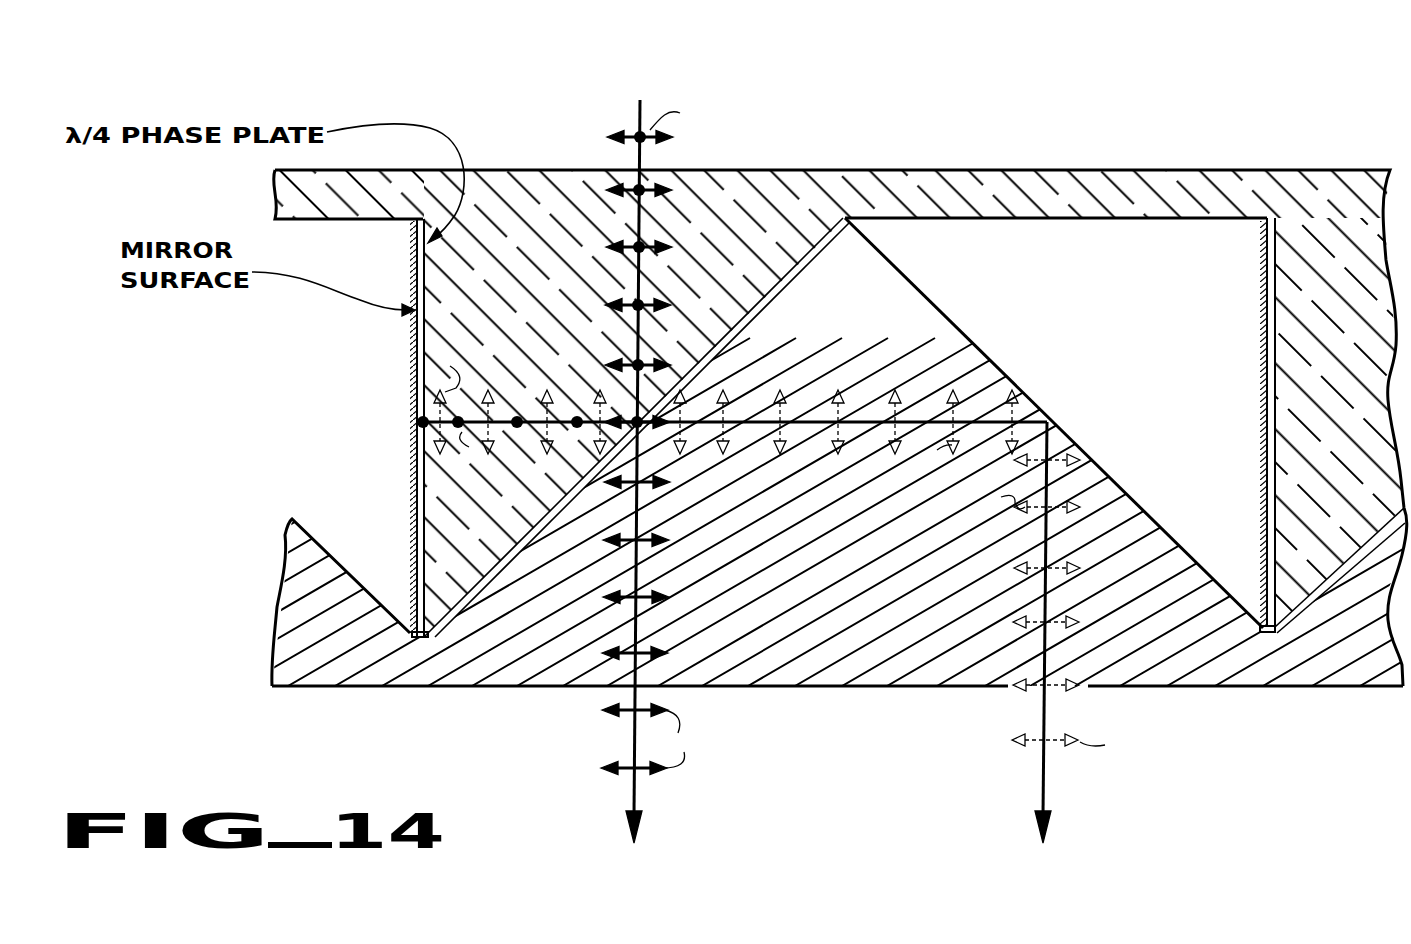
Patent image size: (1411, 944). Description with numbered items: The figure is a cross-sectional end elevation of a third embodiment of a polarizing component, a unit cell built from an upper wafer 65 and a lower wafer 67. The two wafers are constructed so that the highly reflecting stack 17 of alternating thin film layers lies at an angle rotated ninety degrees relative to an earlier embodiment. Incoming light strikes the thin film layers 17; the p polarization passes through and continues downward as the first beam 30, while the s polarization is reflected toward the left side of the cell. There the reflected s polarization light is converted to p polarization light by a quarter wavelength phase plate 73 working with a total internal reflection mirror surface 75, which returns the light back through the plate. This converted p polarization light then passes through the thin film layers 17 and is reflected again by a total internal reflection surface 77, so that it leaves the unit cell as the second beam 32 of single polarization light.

The upper wafer 65 is at (1268, 158).
The lower wafer 67 is at (1280, 691).
The quarter wavelength phase plate 73 is at (421, 280).
The total internal reflection mirror surface 75 is at (412, 345).
The highly reflecting stack of alternating thin film layers 17 is at (815, 260).
The total internal reflection surface 77 is at (963, 342).
The first beam 30 is at (646, 811).
The second beam 32 is at (1066, 811).